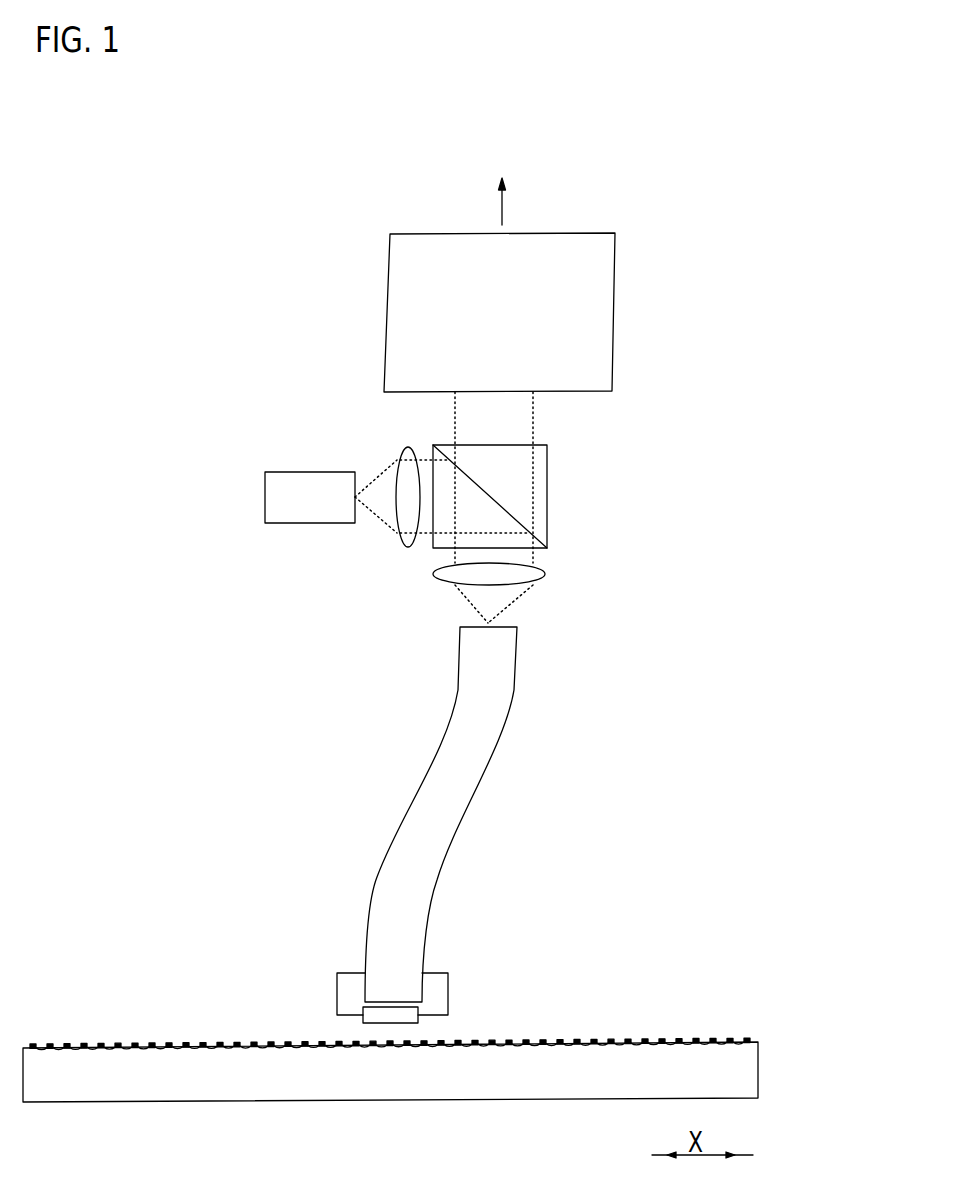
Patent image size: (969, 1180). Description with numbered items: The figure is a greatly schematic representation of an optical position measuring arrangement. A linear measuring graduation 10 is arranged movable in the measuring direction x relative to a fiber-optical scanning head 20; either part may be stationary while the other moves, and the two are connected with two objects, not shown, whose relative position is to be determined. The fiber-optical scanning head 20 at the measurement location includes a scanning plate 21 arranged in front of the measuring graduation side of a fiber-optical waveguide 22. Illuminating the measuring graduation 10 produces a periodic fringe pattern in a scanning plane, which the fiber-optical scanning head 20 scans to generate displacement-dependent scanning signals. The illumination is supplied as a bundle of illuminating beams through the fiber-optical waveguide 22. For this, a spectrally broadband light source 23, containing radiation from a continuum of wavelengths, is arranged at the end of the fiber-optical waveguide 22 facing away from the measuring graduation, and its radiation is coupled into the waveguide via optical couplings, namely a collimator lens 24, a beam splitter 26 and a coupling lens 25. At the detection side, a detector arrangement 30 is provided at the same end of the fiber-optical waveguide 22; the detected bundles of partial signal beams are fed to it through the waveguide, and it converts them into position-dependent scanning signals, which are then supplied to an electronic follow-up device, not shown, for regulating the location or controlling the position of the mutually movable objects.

The linear measuring graduation 10 is at (740, 1073).
The fiber-optical scanning head 20 is at (336, 993).
The scanning plate 21 is at (407, 1015).
The fiber-optical waveguide 22 is at (420, 832).
The spectrally broadband light source 23 is at (293, 492).
The collimator lens 24 is at (397, 542).
The coupling lens 25 is at (543, 580).
The beam splitter 26 is at (517, 485).
The detector arrangement 30 is at (578, 292).